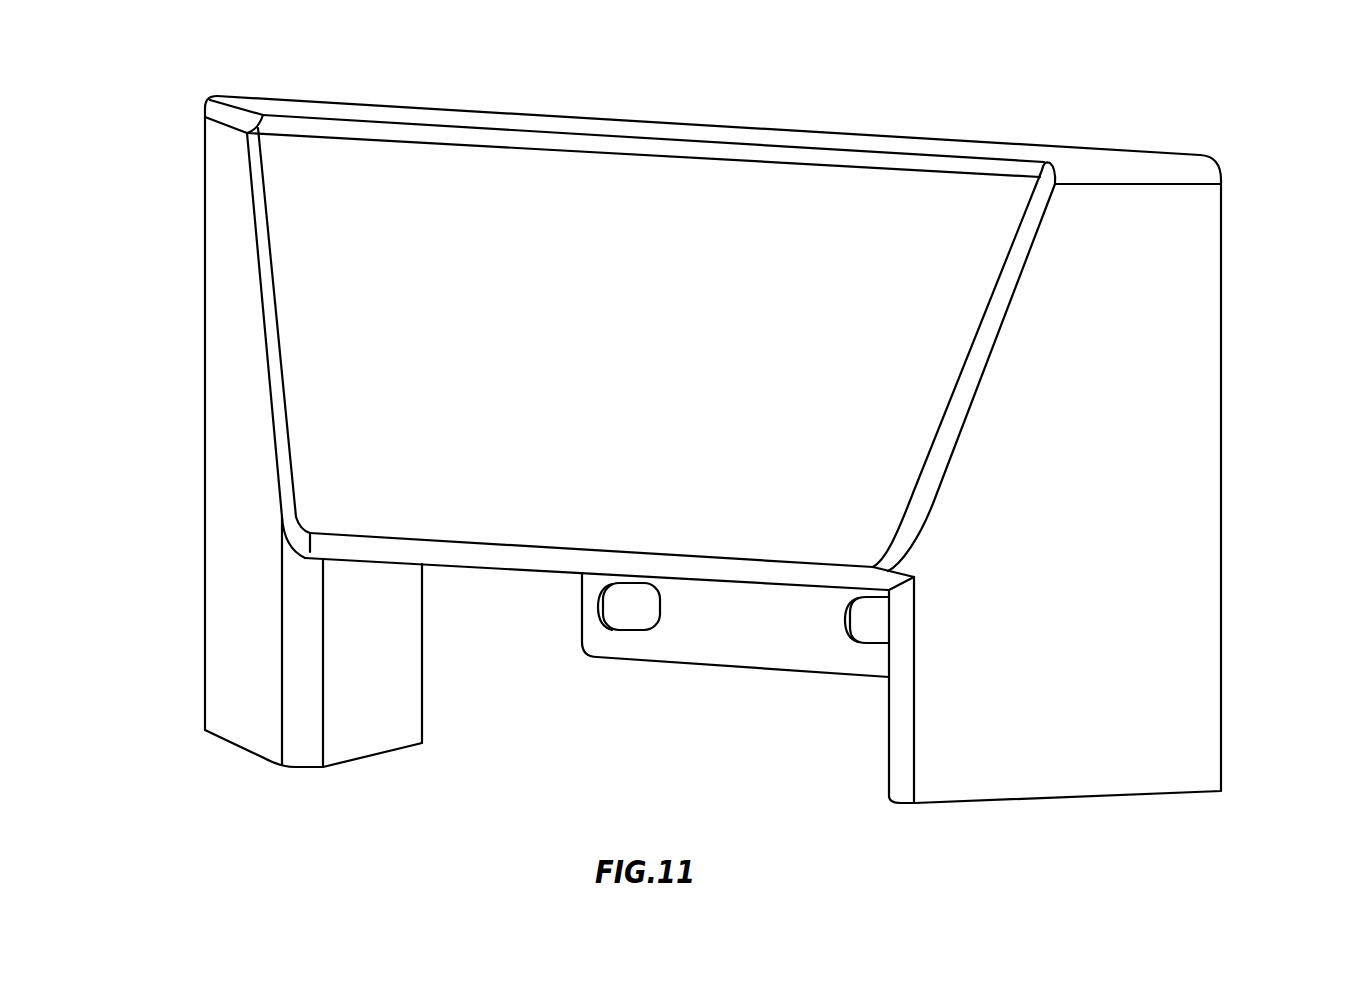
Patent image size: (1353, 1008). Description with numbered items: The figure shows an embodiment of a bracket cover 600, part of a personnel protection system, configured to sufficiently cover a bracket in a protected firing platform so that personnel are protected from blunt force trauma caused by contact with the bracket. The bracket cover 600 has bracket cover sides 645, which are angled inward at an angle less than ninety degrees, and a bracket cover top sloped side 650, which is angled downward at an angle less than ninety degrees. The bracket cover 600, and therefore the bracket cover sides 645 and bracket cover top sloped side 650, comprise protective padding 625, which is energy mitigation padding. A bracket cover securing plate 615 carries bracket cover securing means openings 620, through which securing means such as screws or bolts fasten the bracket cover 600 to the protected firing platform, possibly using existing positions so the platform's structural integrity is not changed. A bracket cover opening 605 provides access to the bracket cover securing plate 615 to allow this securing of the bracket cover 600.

The bracket cover 600 is at (708, 460).
The bracket cover opening 605 is at (800, 777).
The bracket cover securing plate 615 is at (712, 658).
The bracket cover securing means openings 620 is at (632, 608).
The protective padding 625 is at (356, 124).
The bracket cover sides 645 is at (223, 517).
The bracket cover top sloped side 650 is at (679, 186).